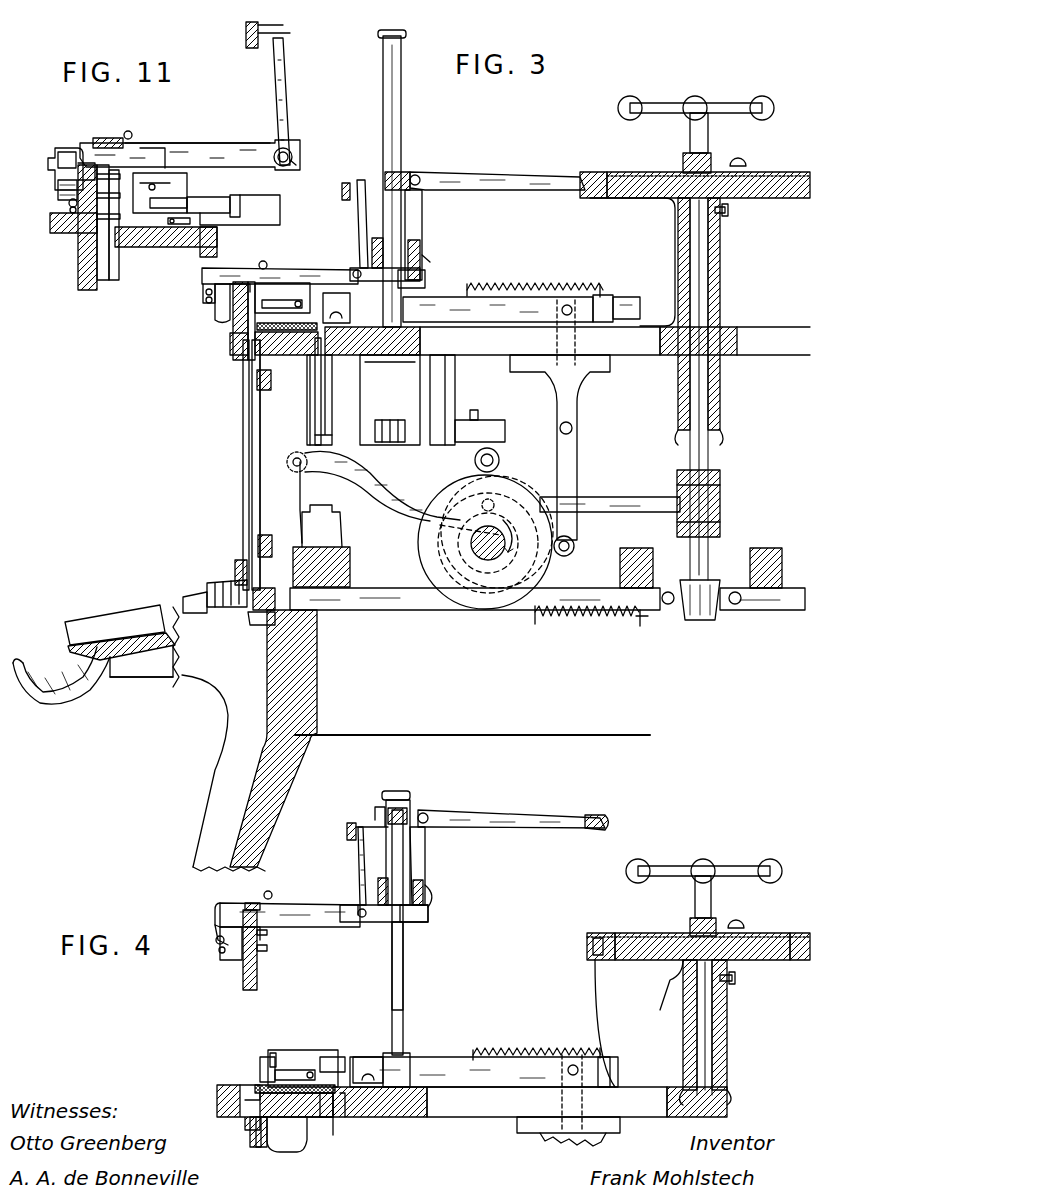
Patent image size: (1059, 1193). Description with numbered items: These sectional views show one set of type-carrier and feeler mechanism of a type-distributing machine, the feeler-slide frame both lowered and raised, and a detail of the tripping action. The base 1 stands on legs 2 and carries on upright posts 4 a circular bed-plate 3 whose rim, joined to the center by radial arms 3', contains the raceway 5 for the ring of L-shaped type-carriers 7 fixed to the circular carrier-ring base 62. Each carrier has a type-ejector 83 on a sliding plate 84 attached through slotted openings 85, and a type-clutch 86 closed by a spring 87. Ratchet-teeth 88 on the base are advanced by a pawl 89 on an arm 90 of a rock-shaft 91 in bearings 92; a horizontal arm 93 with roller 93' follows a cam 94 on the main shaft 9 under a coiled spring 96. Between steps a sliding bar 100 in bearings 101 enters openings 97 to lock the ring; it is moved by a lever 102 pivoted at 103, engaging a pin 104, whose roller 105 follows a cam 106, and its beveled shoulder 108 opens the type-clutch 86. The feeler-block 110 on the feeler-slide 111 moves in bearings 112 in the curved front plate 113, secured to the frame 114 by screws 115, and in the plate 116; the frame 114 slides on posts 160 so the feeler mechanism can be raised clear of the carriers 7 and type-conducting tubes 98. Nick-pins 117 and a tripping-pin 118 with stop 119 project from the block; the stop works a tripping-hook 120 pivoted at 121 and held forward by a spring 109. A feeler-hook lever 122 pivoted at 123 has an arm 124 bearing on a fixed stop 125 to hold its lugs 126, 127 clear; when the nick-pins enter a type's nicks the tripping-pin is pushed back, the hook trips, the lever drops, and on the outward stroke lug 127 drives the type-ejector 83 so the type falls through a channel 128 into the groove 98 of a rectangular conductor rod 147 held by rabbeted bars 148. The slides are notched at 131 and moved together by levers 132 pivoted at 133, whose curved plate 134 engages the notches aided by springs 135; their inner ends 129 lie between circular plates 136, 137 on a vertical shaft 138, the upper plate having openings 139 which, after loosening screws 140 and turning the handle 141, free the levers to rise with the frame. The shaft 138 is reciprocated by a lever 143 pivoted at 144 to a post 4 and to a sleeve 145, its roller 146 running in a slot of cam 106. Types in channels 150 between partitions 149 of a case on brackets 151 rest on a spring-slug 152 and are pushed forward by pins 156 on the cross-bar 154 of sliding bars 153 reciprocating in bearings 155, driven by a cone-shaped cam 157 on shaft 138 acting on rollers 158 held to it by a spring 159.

In FIG. 3, the base 1 is at (510, 728).
In FIG. 3, the legs 2 is at (228, 760).
In FIG. 3, the circular bed-plate 3 is at (387, 341).
In FIG. 4, the circular bed-plate 3 is at (380, 1119).
In FIG. 3, the radial arms 3' is at (615, 341).
In FIG. 4, the radial arms 3' is at (493, 1116).
In FIG. 3, the upright posts 4 is at (281, 465).
In FIG. 4, the upright posts 4 is at (290, 1152).
In FIG. 4, the track or raceway 5 is at (300, 1108).
In FIG. 11, the type-carrier 7 is at (140, 247).
In FIG. 4, the type-carrier 7 is at (245, 1085).
In FIG. 3, the main operative shaft 9 is at (480, 560).
In FIG. 11, the carrier-ring base 62 is at (198, 247).
In FIG. 3, the carrier-ring base 62 is at (230, 348).
In FIG. 4, the carrier-ring base 62 is at (326, 1120).
In FIG. 11, the type-ejector 83 is at (119, 265).
In FIG. 4, the type-ejector 83 is at (276, 1047).
In FIG. 11, the sliding plate 84 is at (190, 185).
In FIG. 3, the sliding plate 84 is at (290, 292).
In FIG. 4, the sliding plate 84 is at (300, 1060).
In FIG. 11, the slotted openings 85 is at (190, 222).
In FIG. 11, the type-clutch 86 is at (218, 203).
In FIG. 4, the type-clutch 86 is at (265, 1063).
In FIG. 4, the spring 87 is at (333, 1060).
In FIG. 3, the ratchet-teeth 88 is at (312, 352).
In FIG. 4, the ratchet-teeth 88 is at (335, 1135).
In FIG. 3, the pawl 89 is at (308, 380).
In FIG. 3, the arm 90 is at (318, 403).
In FIG. 3, the rock-shaft 91 is at (446, 425).
In FIG. 3, the bearings 92 is at (412, 392).
In FIG. 3, the horizontal arm 93 is at (481, 419).
In FIG. 3, the roller 93' is at (507, 454).
In FIG. 3, the cam 94 is at (500, 480).
In FIG. 3, the coiled spring 96 is at (390, 422).
In FIG. 3, the openings 97 is at (336, 301).
In FIG. 4, the openings 97 is at (370, 1058).
In FIG. 3, the type-conducting tube 98 is at (243, 443).
In FIG. 4, the type-conducting tube 98 is at (250, 1138).
In FIG. 11, the sliding bar 100 is at (270, 213).
In FIG. 3, the sliding bar 100 is at (415, 310).
In FIG. 4, the sliding bar 100 is at (455, 1070).
In FIG. 4, the bearings 101 is at (397, 1053).
In FIG. 3, the lever 102 is at (571, 460).
In FIG. 4, the lever 102 is at (560, 1098).
In FIG. 3, the pivot 103 is at (573, 426).
In FIG. 3, the pin 104 is at (570, 305).
In FIG. 4, the pin 104 is at (576, 1068).
In FIG. 3, the roller 105 is at (574, 542).
In FIG. 3, the cam 106 is at (560, 556).
In FIG. 11, the beveled shoulder 108 is at (242, 204).
In FIG. 4, the beveled shoulder 108 is at (362, 1120).
In FIG. 11, the spring 109 is at (58, 188).
In FIG. 3, the spring 109 is at (396, 574).
In FIG. 11, the feeler-block 110 is at (60, 230).
In FIG. 3, the feeler-block 110 is at (215, 312).
In FIG. 4, the feeler-block 110 is at (220, 950).
In FIG. 11, the feeler-slide 111 is at (296, 150).
In FIG. 4, the feeler-slide 111 is at (398, 916).
In FIG. 4, the bearings 112 is at (376, 966).
In FIG. 11, the curved front plate 113 is at (99, 131).
In FIG. 3, the curved front plate 113 is at (233, 335).
In FIG. 4, the curved front plate 113 is at (243, 970).
In FIG. 11, the frame 114 is at (180, 143).
In FIG. 3, the frame 114 is at (405, 172).
In FIG. 4, the frame 114 is at (408, 812).
In FIG. 11, the screws 115 is at (140, 126).
In FIG. 3, the screws 115 is at (271, 251).
In FIG. 4, the screws 115 is at (278, 883).
In FIG. 3, the plate 116 is at (372, 250).
In FIG. 4, the plate 116 is at (378, 886).
In FIG. 11, the nick-pins 117 is at (80, 262).
In FIG. 4, the nick-pins 117 is at (265, 948).
In FIG. 11, the tripping-pin 118 is at (88, 170).
In FIG. 3, the tripping-pin 118 is at (227, 274).
In FIG. 4, the tripping-pin 118 is at (250, 903).
In FIG. 11, the stop 119 is at (60, 160).
In FIG. 4, the stop 119 is at (215, 930).
In FIG. 11, the tripping-hook 120 is at (68, 205).
In FIG. 3, the tripping-hook 120 is at (206, 288).
In FIG. 4, the tripping-hook 120 is at (215, 940).
In FIG. 11, the pivot point 121 is at (71, 212).
In FIG. 3, the pivot point 121 is at (206, 300).
In FIG. 4, the pivot point 121 is at (218, 950).
In FIG. 11, the feeler-hook lever 122 is at (232, 158).
In FIG. 3, the feeler-hook lever 122 is at (332, 268).
In FIG. 4, the feeler-hook lever 122 is at (320, 920).
In FIG. 11, the pivot point 123 is at (298, 162).
In FIG. 4, the pivot point 123 is at (359, 922).
In FIG. 11, the arm 124 is at (278, 92).
In FIG. 3, the arm 124 is at (358, 215).
In FIG. 4, the arm 124 is at (358, 858).
In FIG. 11, the fixed stop 125 is at (246, 31).
In FIG. 4, the fixed stop 125 is at (350, 823).
In FIG. 11, the lug 126 is at (68, 160).
In FIG. 4, the lug 126 is at (218, 908).
In FIG. 11, the lug 127 is at (140, 168).
In FIG. 3, the lug 127 is at (262, 284).
In FIG. 4, the lug 127 is at (271, 934).
In FIG. 11, the channel 128 is at (102, 282).
In FIG. 3, the channel 128 is at (248, 342).
In FIG. 3, the inner ends 129 is at (593, 172).
In FIG. 4, the inner ends 129 is at (606, 809).
In FIG. 3, the notches 131 is at (425, 278).
In FIG. 4, the notches 131 is at (429, 912).
In FIG. 3, the levers 132 is at (520, 176).
In FIG. 4, the levers 132 is at (515, 816).
In FIG. 3, the pivot 133 is at (422, 178).
In FIG. 4, the pivot 133 is at (430, 815).
In FIG. 3, the lower curved plate 134 is at (421, 250).
In FIG. 4, the lower curved plate 134 is at (426, 884).
In FIG. 3, the springs 135 is at (424, 265).
In FIG. 4, the springs 135 is at (432, 905).
In FIG. 3, the circular plate 136 is at (622, 184).
In FIG. 4, the circular plate 136 is at (630, 960).
In FIG. 3, the circular plate 137 is at (640, 160).
In FIG. 4, the circular plate 137 is at (633, 933).
In FIG. 3, the vertical shaft 138 is at (709, 246).
In FIG. 4, the vertical shaft 138 is at (728, 1014).
In FIG. 4, the openings 139 is at (605, 933).
In FIG. 3, the screws 140 is at (745, 164).
In FIG. 4, the screws 140 is at (747, 915).
In FIG. 3, the handle 141 is at (732, 113).
In FIG. 4, the handle 141 is at (736, 870).
In FIG. 3, the lever 143 is at (630, 496).
In FIG. 3, the pivot 144 is at (292, 470).
In FIG. 3, the sleeve 145 is at (722, 506).
In FIG. 3, the roller 146 is at (484, 502).
In FIG. 3, the rectangular rods 147 is at (252, 508).
In FIG. 4, the rectangular rods 147 is at (258, 1148).
In FIG. 3, the rabbeted bars 148 is at (257, 382).
In FIG. 3, the partitions 149 is at (130, 616).
In FIG. 3, the channels 150 is at (100, 630).
In FIG. 3, the brackets 151 is at (150, 662).
In FIG. 3, the spring-slug 152 is at (190, 596).
In FIG. 3, the sliding bars 153 is at (410, 610).
In FIG. 3, the cross-bar 154 is at (268, 637).
In FIG. 3, the bearings 155 is at (314, 612).
In FIG. 3, the pins 156 is at (255, 615).
In FIG. 3, the cone-shaped cam 157 is at (700, 622).
In FIG. 3, the rollers 158 is at (668, 606).
In FIG. 3, the spring 159 is at (588, 628).
In FIG. 3, the posts 160 is at (401, 120).
In FIG. 4, the posts 160 is at (395, 791).